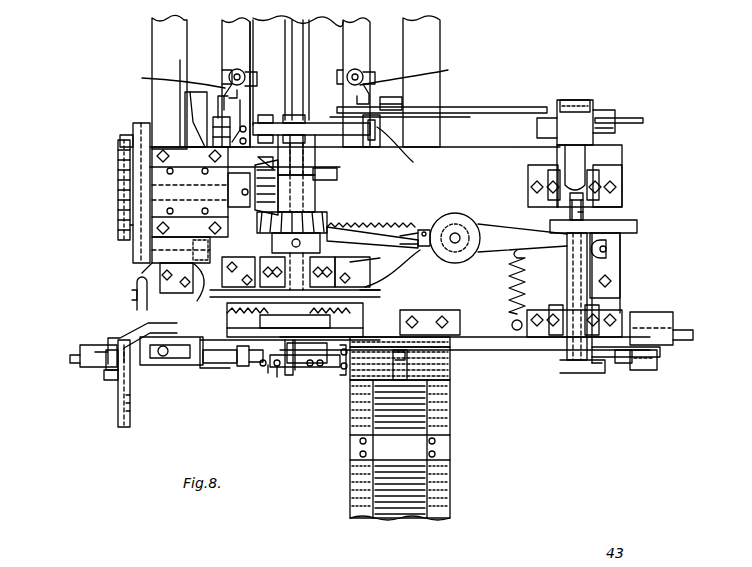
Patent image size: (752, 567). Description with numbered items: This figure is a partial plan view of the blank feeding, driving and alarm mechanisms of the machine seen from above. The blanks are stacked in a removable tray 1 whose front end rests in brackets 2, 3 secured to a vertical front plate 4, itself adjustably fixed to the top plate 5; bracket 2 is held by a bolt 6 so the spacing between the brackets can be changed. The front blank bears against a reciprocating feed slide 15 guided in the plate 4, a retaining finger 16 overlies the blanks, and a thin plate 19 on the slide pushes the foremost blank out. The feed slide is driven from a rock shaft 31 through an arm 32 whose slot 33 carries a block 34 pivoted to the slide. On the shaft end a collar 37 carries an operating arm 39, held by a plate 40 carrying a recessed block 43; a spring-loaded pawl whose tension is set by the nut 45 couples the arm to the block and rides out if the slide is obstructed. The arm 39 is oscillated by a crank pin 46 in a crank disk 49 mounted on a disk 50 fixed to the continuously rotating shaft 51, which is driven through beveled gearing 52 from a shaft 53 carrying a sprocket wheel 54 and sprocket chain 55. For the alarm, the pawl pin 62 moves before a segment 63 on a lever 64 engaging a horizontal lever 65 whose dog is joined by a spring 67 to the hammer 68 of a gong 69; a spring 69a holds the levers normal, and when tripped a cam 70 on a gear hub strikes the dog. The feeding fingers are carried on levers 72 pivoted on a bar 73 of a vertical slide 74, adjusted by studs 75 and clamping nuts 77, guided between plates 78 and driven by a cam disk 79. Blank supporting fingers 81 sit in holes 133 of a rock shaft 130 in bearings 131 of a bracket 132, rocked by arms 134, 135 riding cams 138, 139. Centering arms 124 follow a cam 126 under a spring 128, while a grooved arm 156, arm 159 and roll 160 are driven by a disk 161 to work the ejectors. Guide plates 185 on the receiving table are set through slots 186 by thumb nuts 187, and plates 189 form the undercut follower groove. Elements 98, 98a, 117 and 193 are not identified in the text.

The removable tray 1 is at (450, 428).
The bracket 2 is at (450, 372).
The bracket 3 is at (344, 378).
The vertical front plate 4 is at (512, 340).
The top plate 5 is at (475, 152).
The bolt 6 is at (450, 350).
The feed slide 15 is at (680, 328).
The retaining finger 16 is at (400, 368).
The thin plate 19 is at (680, 340).
The rock shaft 31 is at (583, 212).
The arm 32 is at (600, 373).
The slot 33 is at (623, 352).
The block 34 is at (633, 365).
The collar 37 is at (557, 156).
The operating arm 39 is at (615, 128).
The plate 40 is at (608, 115).
The block 43 is at (585, 98).
The nut 45 is at (614, 188).
The crank pin 46 is at (343, 95).
The crank disk 49 is at (372, 148).
The disk 50 is at (330, 140).
The shaft 51 is at (318, 210).
The beveled gearing 52 is at (327, 223).
The shaft 53 is at (160, 182).
The sprocket wheel 54 is at (118, 210).
The sprocket chain 55 is at (118, 235).
The pin 62 is at (565, 216).
The segment 63 is at (637, 229).
The lever 64 is at (618, 246).
The horizontal lever 65 is at (492, 235).
The spring 67 is at (370, 242).
The hammer 68 is at (420, 246).
The gong 69 is at (456, 214).
The spring 69a is at (512, 290).
The cam 70 is at (265, 242).
The levers 72 is at (293, 372).
The bar 73 is at (250, 355).
The slide 74 is at (380, 292).
The studs 75 is at (292, 376).
The clamping nuts 77 is at (312, 368).
The vertical guide plates 78 is at (363, 323).
The cam disk 79 is at (262, 322).
The blank supporting fingers 81 is at (277, 372).
The clamp 98 is at (440, 124).
The clamp part 98a is at (205, 100).
The rod 117 is at (494, 106).
The horizontally extending arms 124 is at (392, 269).
The cam 126 is at (373, 261).
The spring 128 is at (295, 275).
The rock shaft 130 is at (262, 350).
The bearings 131 is at (97, 362).
The bracket 132 is at (122, 335).
The holes 133 is at (268, 368).
The arm 134 is at (108, 380).
The arm 135 is at (132, 368).
The cam 138 is at (131, 400).
The cam 139 is at (110, 368).
The grooved arm 156 is at (197, 298).
The arm 159 is at (155, 262).
The roll 160 is at (142, 255).
The disk 161 is at (141, 122).
The guide plates 185 is at (222, 36).
The slots 186 is at (293, 74).
The thumb nuts 187 is at (235, 65).
The plates 189 is at (296, 22).
The lead 193 is at (408, 149).